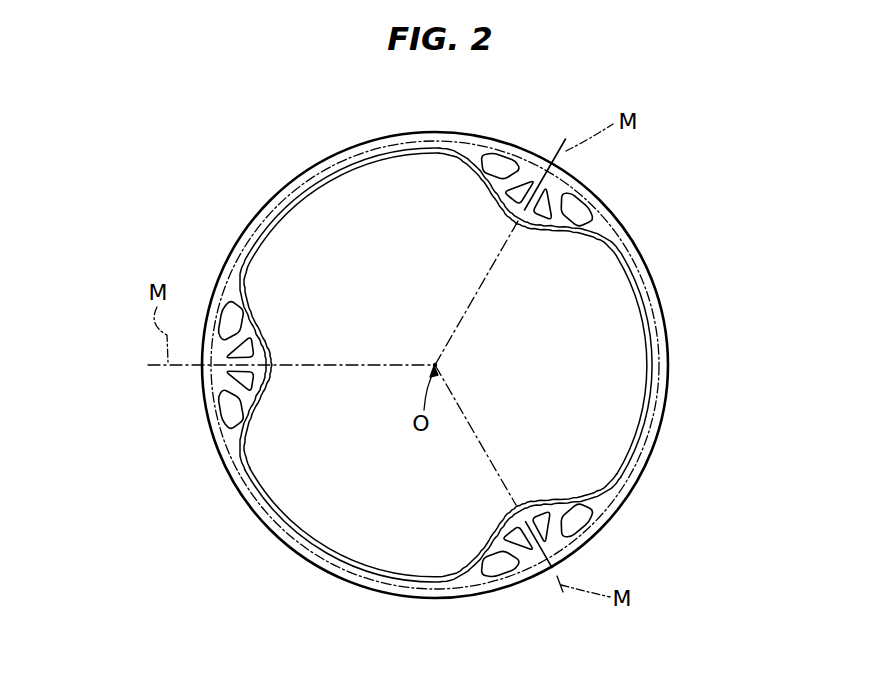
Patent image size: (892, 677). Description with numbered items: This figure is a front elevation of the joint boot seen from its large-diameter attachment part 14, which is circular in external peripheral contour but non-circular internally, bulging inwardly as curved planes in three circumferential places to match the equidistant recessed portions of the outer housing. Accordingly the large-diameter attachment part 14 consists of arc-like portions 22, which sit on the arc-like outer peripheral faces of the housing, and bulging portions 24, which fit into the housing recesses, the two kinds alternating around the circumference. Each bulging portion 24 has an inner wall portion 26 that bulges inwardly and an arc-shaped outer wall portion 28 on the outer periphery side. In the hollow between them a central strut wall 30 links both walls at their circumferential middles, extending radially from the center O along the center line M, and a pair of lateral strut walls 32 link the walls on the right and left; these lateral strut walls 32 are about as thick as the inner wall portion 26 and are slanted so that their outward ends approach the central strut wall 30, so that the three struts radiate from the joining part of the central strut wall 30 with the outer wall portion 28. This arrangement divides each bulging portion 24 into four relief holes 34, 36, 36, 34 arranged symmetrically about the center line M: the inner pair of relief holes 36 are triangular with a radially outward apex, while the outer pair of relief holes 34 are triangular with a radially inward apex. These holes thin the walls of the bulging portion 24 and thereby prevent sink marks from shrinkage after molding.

The large-diameter attachment part 14 is at (443, 113).
The arc-like portion 22 is at (337, 153).
The bulging portion 24 is at (271, 343).
The inner wall portion 26 is at (253, 327).
The outer wall portion 28 is at (202, 395).
The central strut wall 30 is at (259, 387).
The lateral strut wall 32 is at (245, 323).
The relief hole 34 is at (600, 518).
The relief hole 36 is at (588, 535).